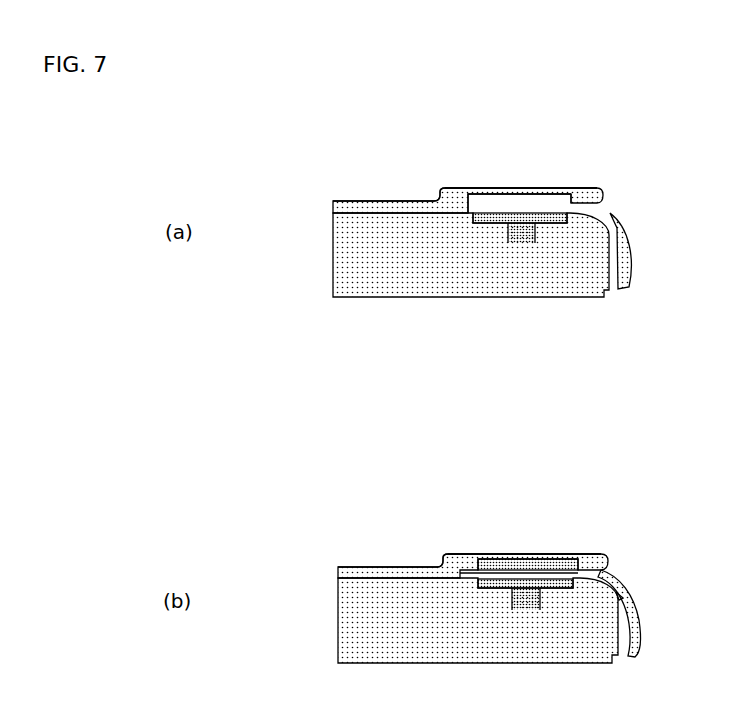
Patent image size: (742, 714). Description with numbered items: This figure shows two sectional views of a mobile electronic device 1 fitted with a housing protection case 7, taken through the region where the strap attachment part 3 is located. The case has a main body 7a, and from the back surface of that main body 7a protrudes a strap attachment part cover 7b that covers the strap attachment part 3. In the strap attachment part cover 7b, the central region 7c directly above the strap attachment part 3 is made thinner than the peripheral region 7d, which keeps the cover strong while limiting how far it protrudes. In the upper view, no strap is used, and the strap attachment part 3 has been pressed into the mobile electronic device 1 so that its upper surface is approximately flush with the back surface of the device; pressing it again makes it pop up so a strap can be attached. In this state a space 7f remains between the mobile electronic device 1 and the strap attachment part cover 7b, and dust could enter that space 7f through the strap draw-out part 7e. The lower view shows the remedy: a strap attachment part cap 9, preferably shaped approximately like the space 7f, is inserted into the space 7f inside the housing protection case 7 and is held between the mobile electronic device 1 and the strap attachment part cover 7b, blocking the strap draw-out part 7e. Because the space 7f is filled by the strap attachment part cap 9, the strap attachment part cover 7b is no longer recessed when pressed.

The mobile electronic device 1 is at (438, 283).
The strap attachment part 3 is at (529, 228).
The housing protection case 7 is at (326, 131).
The main body 7a is at (341, 202).
The strap attachment part cover 7b is at (390, 97).
The central region 7c is at (492, 188).
The peripheral region 7d is at (463, 188).
The strap draw-out part 7e is at (608, 202).
The space 7f is at (523, 201).
The strap attachment part cap 9 is at (540, 568).